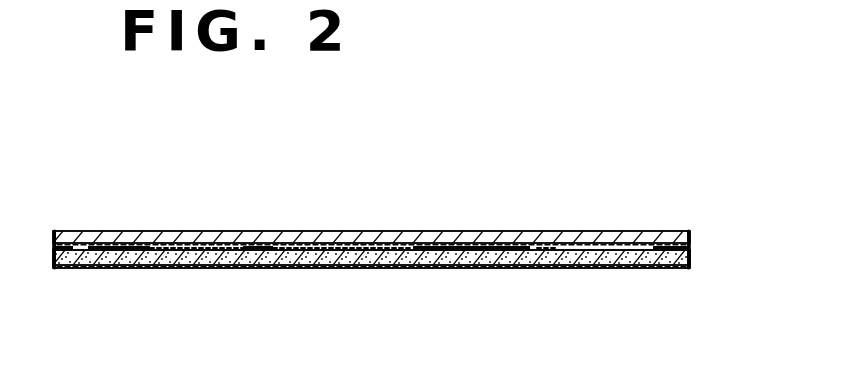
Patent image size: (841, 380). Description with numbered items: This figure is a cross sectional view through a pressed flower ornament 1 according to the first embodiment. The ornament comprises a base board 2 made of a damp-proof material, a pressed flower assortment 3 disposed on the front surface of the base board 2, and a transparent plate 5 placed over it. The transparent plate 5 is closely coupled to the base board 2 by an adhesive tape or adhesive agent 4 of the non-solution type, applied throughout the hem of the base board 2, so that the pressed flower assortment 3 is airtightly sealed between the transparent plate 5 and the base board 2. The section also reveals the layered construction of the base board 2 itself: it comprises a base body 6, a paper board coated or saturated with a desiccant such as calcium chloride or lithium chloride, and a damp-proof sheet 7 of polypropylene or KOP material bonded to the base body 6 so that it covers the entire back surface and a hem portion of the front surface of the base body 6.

The pressed flower ornament 1 is at (650, 186).
The base board 2 is at (258, 269).
The pressed flower assortment 3 is at (197, 240).
The adhesive tape or adhesive agent 4 is at (85, 238).
The transparent plate 5 is at (430, 232).
The base body 6 is at (434, 268).
The damp-proof sheet 7 is at (355, 268).